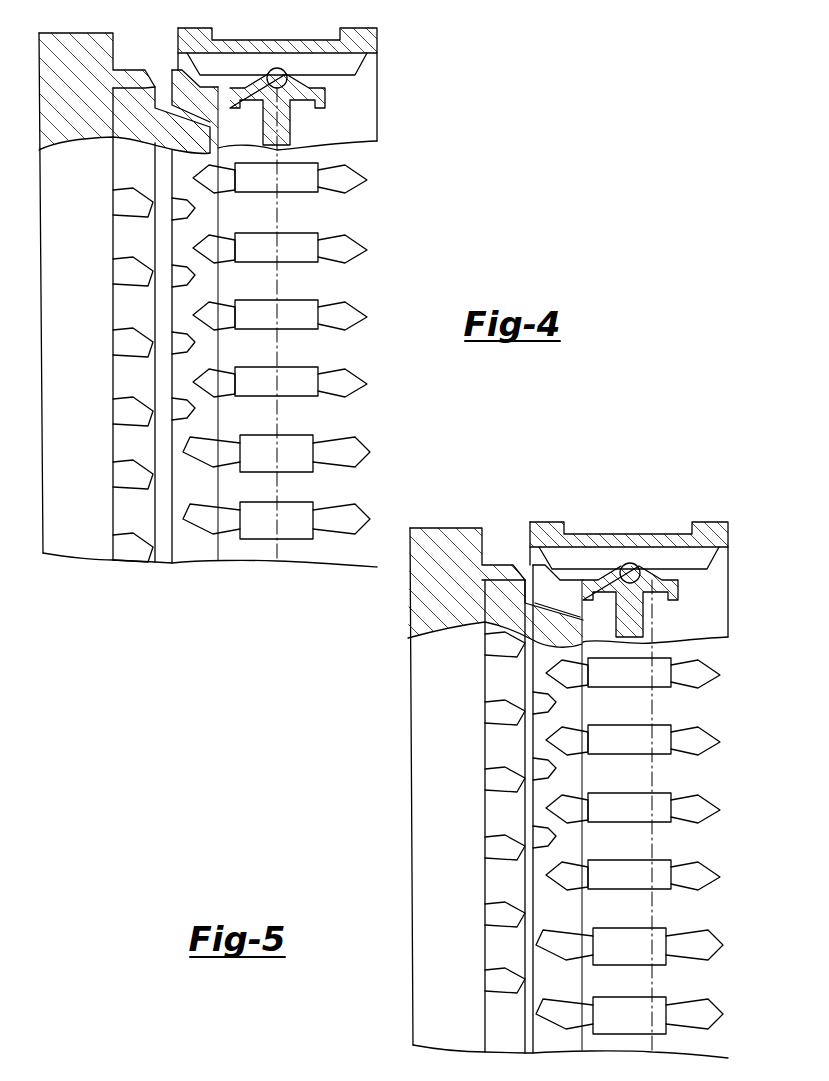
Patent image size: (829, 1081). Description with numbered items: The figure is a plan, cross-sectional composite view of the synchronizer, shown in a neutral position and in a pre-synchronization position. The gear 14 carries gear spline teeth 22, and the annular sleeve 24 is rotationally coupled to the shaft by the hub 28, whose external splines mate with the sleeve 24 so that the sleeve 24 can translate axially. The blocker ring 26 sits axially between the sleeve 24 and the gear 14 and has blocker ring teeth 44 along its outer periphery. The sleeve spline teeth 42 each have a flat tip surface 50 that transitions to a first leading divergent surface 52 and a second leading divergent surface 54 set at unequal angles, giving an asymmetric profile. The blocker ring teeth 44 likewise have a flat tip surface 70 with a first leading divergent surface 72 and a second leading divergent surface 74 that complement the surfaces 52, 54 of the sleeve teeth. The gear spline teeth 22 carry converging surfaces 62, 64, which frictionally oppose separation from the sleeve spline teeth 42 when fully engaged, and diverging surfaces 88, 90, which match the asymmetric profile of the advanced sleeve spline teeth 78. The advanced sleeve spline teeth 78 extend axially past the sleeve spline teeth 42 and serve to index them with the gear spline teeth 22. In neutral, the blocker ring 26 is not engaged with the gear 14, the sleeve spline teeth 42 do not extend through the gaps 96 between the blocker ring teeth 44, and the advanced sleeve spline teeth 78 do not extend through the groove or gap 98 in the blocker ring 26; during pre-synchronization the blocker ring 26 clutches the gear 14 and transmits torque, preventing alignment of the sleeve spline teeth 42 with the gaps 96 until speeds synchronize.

In FIG. 5, the gear 14 is at (477, 528).
In FIG. 4, the gear spline teeth 22 is at (140, 190).
In FIG. 5, the gear spline teeth 22 is at (495, 766).
In FIG. 4, the annular sleeve 24 is at (378, 38).
In FIG. 5, the annular sleeve 24 is at (730, 532).
In FIG. 4, the blocker ring 26 is at (172, 487).
In FIG. 5, the blocker ring 26 is at (560, 597).
In FIG. 4, the hub 28 is at (290, 117).
In FIG. 5, the hub 28 is at (648, 612).
In FIG. 4, the sleeve spline teeth 42 is at (320, 169).
In FIG. 5, the sleeve spline teeth 42 is at (676, 664).
In FIG. 4, the blocker ring teeth 44 is at (195, 215).
In FIG. 5, the blocker ring teeth 44 is at (558, 708).
In FIG. 4, the flat tip surface 50 is at (193, 176).
In FIG. 4, the first leading divergent surface 52 is at (210, 153).
In FIG. 4, the second leading divergent surface 54 is at (218, 198).
In FIG. 4, the first converging surface 62 is at (113, 191).
In FIG. 4, the second converging surface 64 is at (125, 216).
In FIG. 4, the flat tip surface 70 is at (218, 268).
In FIG. 4, the first leading divergent surface 72 is at (190, 292).
In FIG. 4, the second leading divergent surface 74 is at (185, 267).
In FIG. 4, the advanced sleeve spline teeth 78 is at (300, 438).
In FIG. 5, the advanced sleeve spline teeth 78 is at (645, 930).
In FIG. 4, the first diverging surface 88 is at (140, 258).
In FIG. 4, the second diverging surface 90 is at (147, 288).
In FIG. 4, the gaps 96 is at (172, 330).
In FIG. 5, the gaps 96 is at (535, 833).
In FIG. 4, the groove or gap 98 is at (172, 410).
In FIG. 5, the groove or gap 98 is at (535, 905).